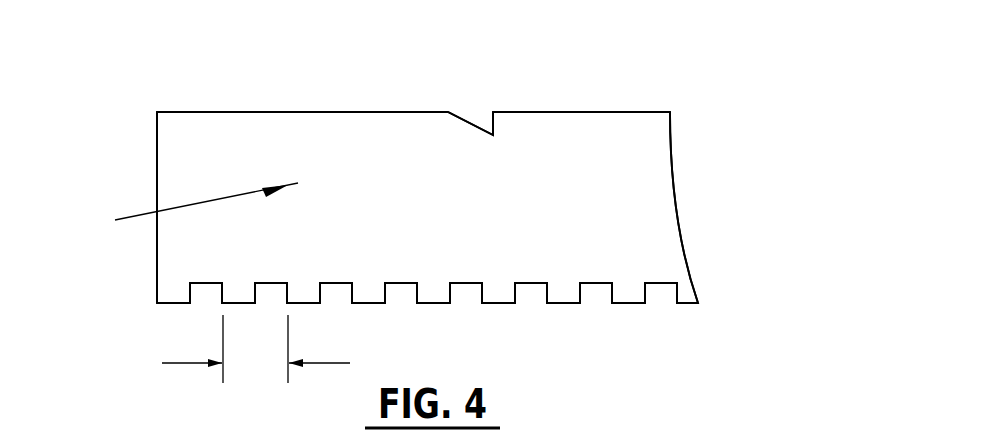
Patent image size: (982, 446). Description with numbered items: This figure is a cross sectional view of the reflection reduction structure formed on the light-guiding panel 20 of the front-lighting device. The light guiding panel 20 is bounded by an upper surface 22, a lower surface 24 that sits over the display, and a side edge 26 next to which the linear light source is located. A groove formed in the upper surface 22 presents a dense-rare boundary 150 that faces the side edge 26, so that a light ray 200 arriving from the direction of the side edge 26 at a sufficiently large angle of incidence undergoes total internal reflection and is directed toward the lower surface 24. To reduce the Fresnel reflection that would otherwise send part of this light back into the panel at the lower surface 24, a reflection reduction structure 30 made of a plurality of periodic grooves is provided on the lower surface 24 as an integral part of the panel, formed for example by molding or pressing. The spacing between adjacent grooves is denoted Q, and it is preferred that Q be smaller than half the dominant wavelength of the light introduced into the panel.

The light-guiding panel 20 is at (645, 198).
The upper surface 22 is at (690, 118).
The lower surface 24 is at (705, 272).
The side edge 26 is at (157, 153).
The reflection reduction structure 30 is at (147, 292).
The dense-rare boundary 150 is at (465, 120).
The light ray 200 is at (240, 195).
The spacing between adjacent grooves Q is at (256, 349).